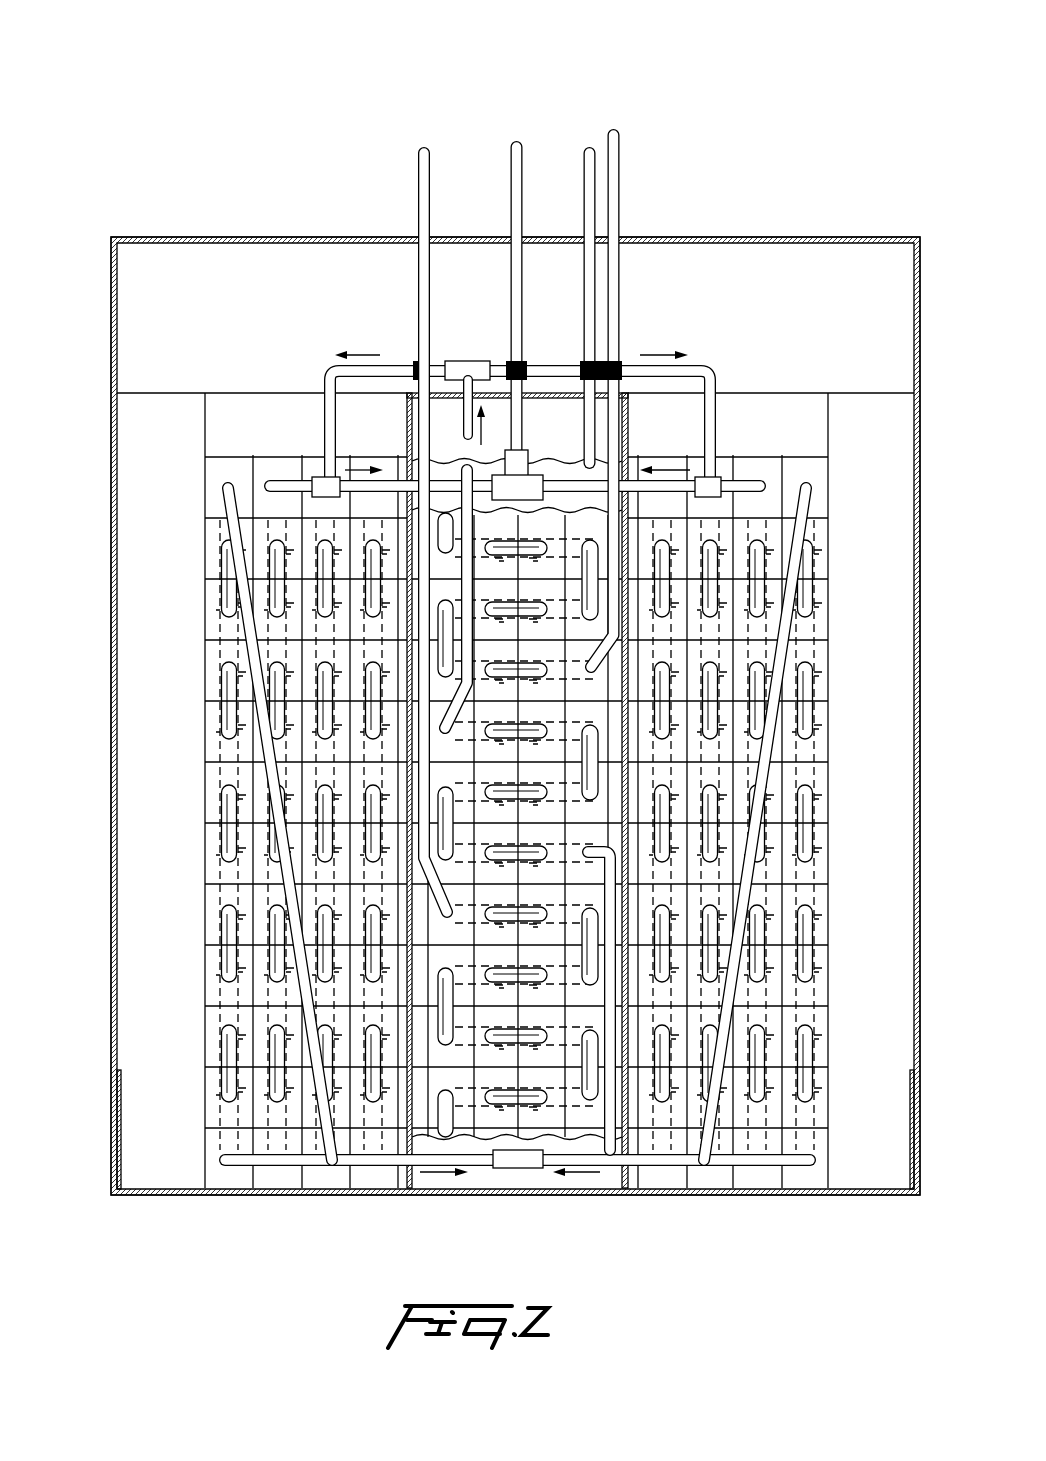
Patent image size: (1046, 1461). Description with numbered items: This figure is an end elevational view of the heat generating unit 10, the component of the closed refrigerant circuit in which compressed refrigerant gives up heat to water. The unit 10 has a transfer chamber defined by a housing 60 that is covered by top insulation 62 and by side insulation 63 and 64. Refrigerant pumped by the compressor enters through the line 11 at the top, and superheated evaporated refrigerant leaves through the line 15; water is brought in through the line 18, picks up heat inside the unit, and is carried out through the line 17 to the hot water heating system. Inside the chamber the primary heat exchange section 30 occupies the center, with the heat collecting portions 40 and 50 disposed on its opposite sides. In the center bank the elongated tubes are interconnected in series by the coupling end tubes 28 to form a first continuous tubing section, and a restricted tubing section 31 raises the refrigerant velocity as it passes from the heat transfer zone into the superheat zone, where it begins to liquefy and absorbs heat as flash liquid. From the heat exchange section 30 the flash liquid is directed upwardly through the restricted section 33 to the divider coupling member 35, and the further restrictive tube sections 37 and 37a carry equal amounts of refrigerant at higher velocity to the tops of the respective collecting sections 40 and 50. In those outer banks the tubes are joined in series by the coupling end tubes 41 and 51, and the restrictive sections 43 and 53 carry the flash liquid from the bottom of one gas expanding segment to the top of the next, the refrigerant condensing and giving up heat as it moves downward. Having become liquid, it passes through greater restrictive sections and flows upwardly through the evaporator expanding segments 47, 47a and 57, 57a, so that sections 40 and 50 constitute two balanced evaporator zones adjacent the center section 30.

The heat generating unit 10 is at (830, 188).
The line 11 is at (418, 170).
The line 15 is at (510, 175).
The line 17 is at (592, 170).
The line 18 is at (611, 183).
The coupling end tubes 28 is at (530, 608).
The primary heat exchange section 30 is at (488, 1208).
The restricted tubing section 31 is at (614, 1080).
The restricted section 33 is at (412, 370).
The divider coupling member 35 is at (466, 430).
The restrictive tube section 37 is at (700, 368).
The restrictive tube section 37a is at (330, 368).
The heat collecting portion 40 is at (722, 1205).
The coupling end tubes 41 is at (805, 932).
The restrictive section 43 is at (812, 525).
The evaporator expanding segment 47 is at (760, 482).
The evaporator expanding segment 47a is at (700, 478).
The heat collecting portion 50 is at (288, 1173).
The coupling end tubes 51 is at (320, 795).
The restrictive section 53 is at (235, 545).
The evaporator expanding segment 57 is at (285, 482).
The evaporator expanding segment 57a is at (340, 478).
The housing 60 is at (815, 240).
The top insulation 62 is at (230, 262).
The side insulation 63 is at (885, 732).
The side insulation 64 is at (160, 680).